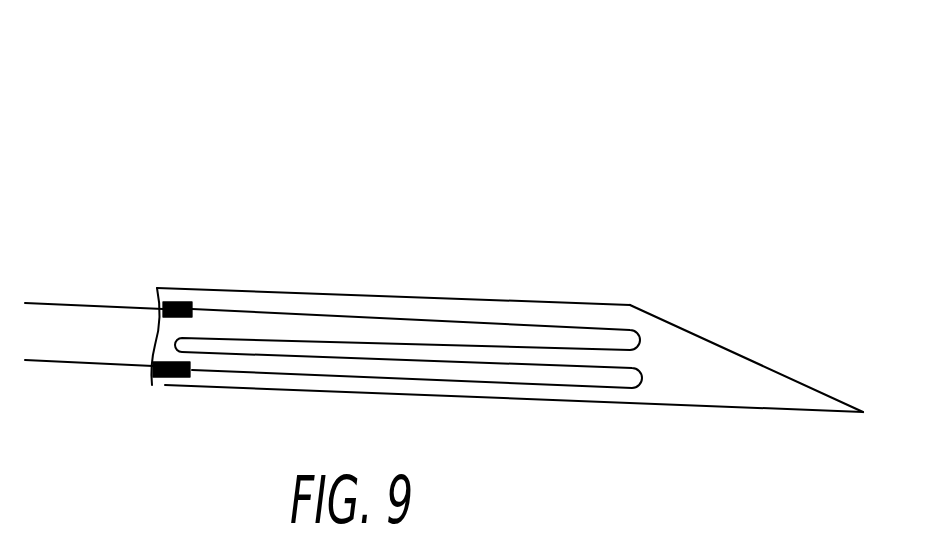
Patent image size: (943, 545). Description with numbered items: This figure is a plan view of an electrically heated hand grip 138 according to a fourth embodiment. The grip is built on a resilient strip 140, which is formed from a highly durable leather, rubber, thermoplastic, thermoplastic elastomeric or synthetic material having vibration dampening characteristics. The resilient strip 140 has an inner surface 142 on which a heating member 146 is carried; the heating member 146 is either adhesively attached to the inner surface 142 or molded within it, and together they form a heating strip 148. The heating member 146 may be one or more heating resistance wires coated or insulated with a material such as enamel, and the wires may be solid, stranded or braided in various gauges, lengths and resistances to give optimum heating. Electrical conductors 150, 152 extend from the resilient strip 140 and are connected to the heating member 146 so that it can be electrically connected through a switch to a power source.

The electrically heated hand grip 138 is at (188, 147).
The resilient strip 140 is at (580, 303).
The inner surface 142 is at (653, 385).
The heating member 146 is at (543, 387).
The heating strip 148 is at (392, 277).
The electrical conductor 150 is at (70, 303).
The electrical conductor 152 is at (58, 363).